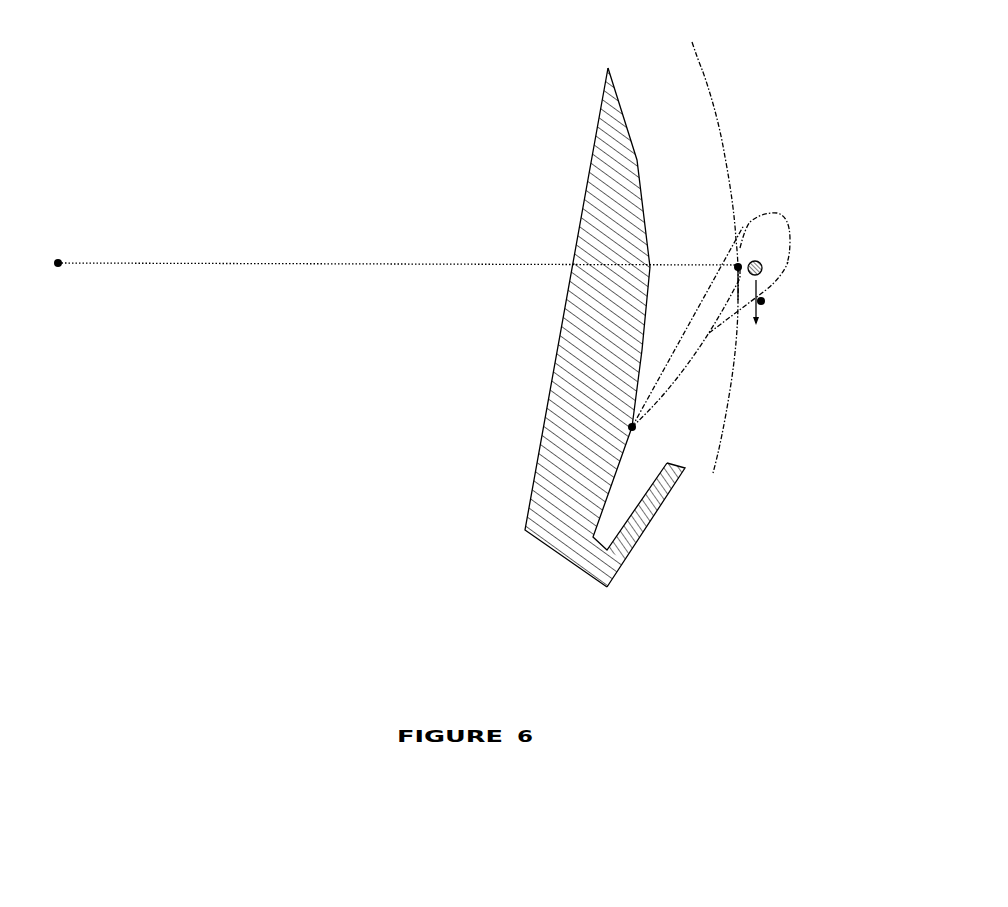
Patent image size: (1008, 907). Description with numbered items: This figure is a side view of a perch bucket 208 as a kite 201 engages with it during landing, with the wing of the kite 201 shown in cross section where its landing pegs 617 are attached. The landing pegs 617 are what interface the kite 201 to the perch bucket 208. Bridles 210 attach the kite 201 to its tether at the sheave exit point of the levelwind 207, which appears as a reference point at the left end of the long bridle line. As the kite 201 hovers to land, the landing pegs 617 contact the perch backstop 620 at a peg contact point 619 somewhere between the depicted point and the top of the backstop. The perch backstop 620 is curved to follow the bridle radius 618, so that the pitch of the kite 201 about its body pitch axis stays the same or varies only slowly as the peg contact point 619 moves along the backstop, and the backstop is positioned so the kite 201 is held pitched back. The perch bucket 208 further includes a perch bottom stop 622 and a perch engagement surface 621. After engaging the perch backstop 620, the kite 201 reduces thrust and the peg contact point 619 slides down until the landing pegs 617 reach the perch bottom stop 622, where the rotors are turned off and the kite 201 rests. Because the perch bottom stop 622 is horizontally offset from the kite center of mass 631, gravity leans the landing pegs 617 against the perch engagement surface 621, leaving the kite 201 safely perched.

The levelwind 207 is at (60, 258).
The bridles 210 is at (343, 262).
The perch bucket 208 is at (548, 411).
The perch backstop 620 is at (635, 143).
The bridle radius 618 is at (703, 72).
The kite 201 is at (783, 228).
The kite center of mass 631 is at (763, 268).
The landing pegs 617 is at (667, 383).
The peg contact point 619 is at (638, 432).
The perch engagement surface 621 is at (643, 503).
The perch bottom stop 622 is at (607, 550).